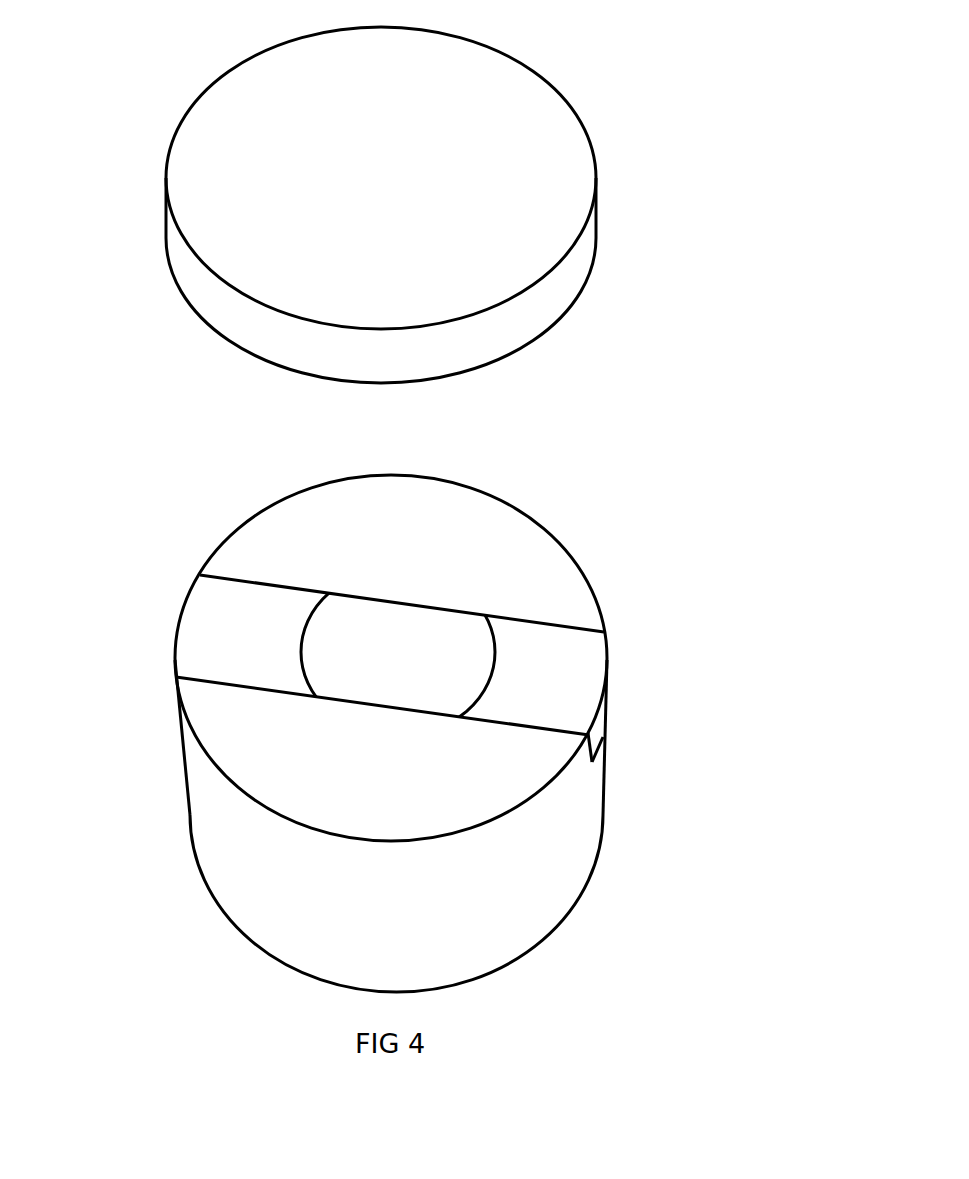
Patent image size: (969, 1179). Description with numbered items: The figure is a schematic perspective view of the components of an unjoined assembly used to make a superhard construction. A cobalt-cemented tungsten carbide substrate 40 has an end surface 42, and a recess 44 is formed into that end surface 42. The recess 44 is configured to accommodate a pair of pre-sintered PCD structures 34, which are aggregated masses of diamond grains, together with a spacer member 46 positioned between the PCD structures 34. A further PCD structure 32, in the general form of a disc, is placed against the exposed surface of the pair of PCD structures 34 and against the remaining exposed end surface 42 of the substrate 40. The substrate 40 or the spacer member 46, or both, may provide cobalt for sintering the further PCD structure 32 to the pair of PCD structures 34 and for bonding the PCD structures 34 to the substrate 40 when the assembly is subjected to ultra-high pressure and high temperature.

The further PCD structure 32 is at (480, 178).
The pre-sintered PCD structures 34 is at (215, 622).
The cobalt-cemented tungsten carbide substrate 40 is at (312, 733).
The end surface 42 is at (397, 782).
The recess 44 is at (592, 762).
The spacer member 46 is at (527, 631).